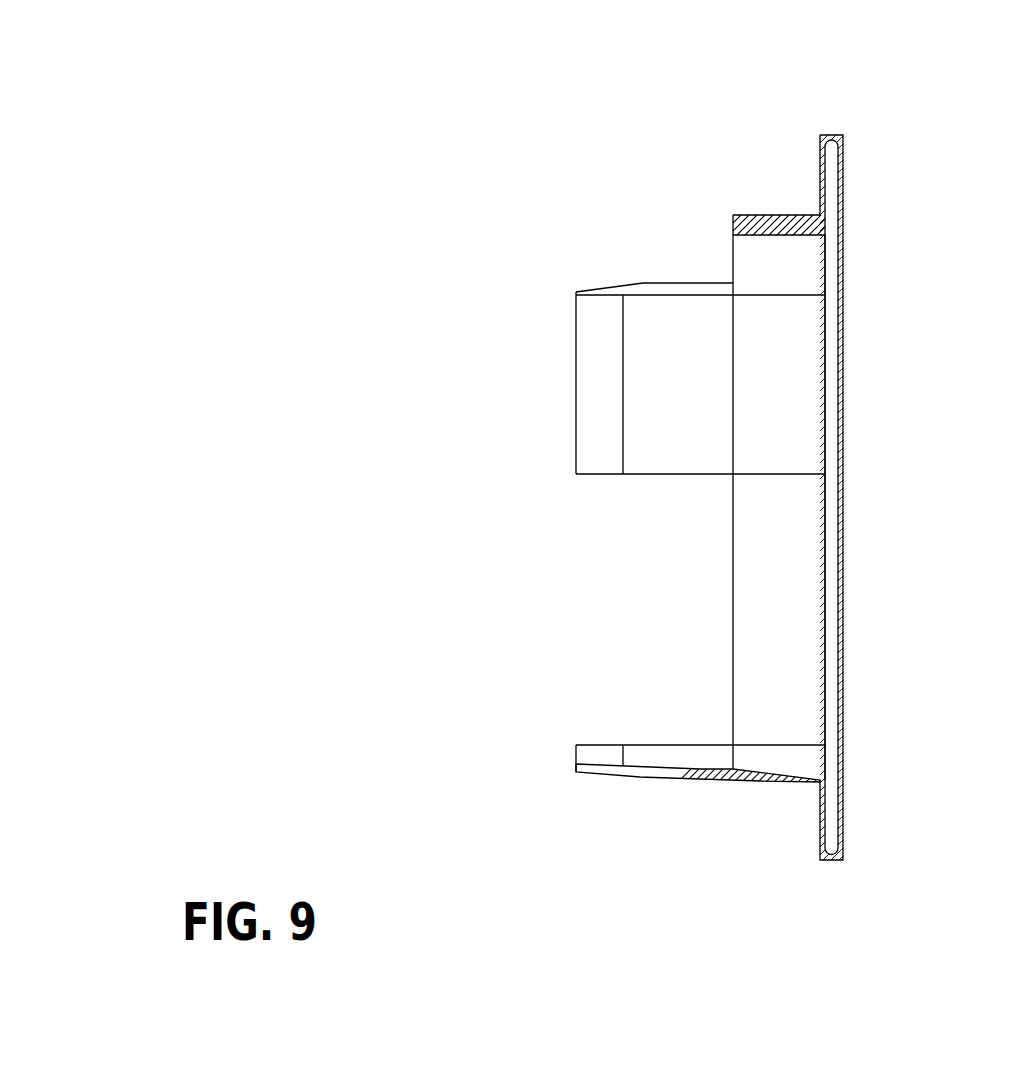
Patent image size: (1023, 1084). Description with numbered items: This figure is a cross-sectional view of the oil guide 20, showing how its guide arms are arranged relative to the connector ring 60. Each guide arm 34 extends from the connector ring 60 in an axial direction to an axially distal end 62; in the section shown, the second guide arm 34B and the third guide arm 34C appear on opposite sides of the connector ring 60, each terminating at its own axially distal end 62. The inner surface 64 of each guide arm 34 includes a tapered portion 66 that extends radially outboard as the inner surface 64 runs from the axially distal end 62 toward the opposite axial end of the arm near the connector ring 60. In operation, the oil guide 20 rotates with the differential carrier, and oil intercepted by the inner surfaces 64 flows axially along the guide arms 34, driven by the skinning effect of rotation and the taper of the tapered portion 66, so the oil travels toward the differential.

The oil guide 20 is at (895, 105).
The connector ring 60 is at (830, 198).
The guide arm 34 is at (765, 537).
The third guide arm 34C is at (650, 325).
The second guide arm 34B is at (638, 781).
The axially distal end 62 is at (576, 370).
The inner surface 64 is at (658, 443).
The tapered portion 66 is at (710, 768).